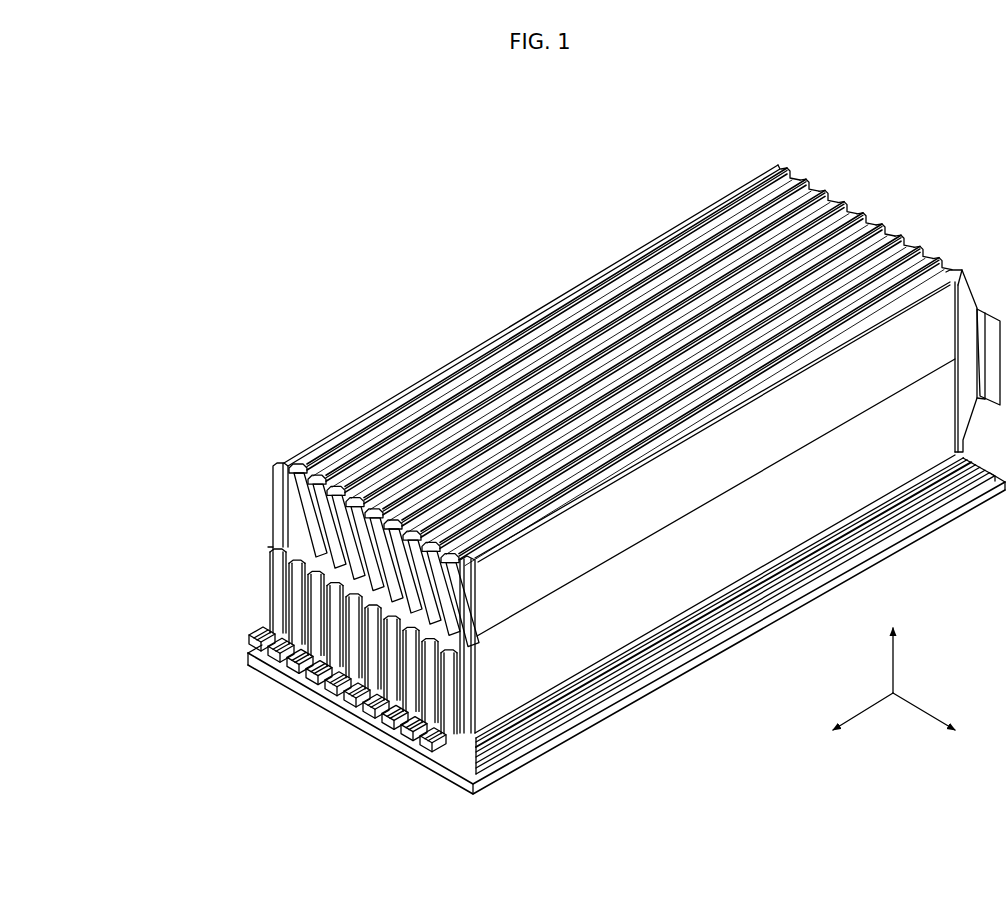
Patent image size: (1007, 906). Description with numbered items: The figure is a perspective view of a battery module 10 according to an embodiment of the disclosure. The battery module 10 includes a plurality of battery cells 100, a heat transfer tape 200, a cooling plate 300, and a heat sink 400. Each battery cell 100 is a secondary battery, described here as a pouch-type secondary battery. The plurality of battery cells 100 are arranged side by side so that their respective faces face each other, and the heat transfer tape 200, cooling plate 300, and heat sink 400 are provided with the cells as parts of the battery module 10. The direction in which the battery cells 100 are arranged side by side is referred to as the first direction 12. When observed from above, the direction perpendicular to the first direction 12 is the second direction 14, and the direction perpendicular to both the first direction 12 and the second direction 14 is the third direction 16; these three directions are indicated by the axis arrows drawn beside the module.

The battery module 10 is at (344, 240).
The battery cell 100 is at (311, 423).
The heat transfer tape 200 is at (272, 515).
The cooling plate 300 is at (245, 629).
The heat sink 400 is at (243, 653).
The first direction 12 is at (939, 720).
The second direction 14 is at (847, 720).
The third direction 16 is at (893, 644).